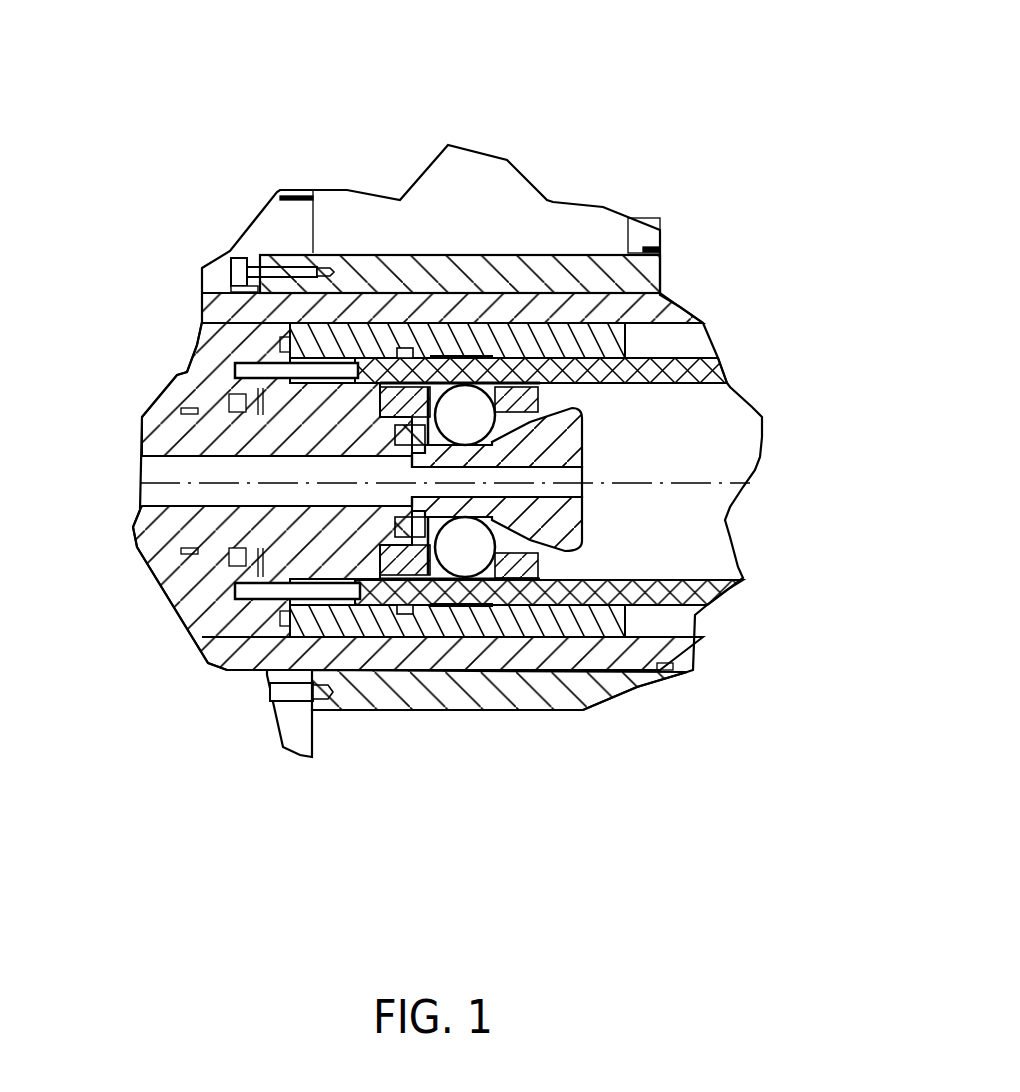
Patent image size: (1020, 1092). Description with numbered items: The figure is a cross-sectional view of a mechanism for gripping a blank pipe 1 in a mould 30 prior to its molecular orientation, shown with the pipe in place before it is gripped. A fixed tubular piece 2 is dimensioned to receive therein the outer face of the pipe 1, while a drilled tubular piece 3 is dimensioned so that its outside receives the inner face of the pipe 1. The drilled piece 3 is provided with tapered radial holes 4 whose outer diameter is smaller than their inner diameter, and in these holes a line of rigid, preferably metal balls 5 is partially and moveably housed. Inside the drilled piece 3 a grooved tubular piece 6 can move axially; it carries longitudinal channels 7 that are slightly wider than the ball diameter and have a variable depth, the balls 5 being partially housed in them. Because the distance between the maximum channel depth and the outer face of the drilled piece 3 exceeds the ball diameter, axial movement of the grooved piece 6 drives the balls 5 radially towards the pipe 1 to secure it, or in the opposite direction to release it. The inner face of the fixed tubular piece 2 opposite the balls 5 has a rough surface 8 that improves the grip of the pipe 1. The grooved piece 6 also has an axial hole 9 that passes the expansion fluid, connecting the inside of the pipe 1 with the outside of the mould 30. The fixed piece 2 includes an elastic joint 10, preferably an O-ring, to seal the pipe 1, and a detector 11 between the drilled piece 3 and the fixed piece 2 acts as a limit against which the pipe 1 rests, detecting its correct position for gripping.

The blank pipe 1 is at (697, 373).
The fixed tubular piece 2 is at (663, 297).
The drilled tubular piece 3 is at (540, 565).
The tapered radial holes 4 is at (493, 580).
The balls 5 is at (497, 417).
The grooved tubular piece 6 is at (587, 447).
The longitudinal channels 7 is at (442, 357).
The rough surface 8 is at (600, 337).
The axial hole 9 is at (570, 483).
The elastic joint 10 is at (405, 355).
The detector 11 is at (235, 373).
The mould 30 is at (353, 690).